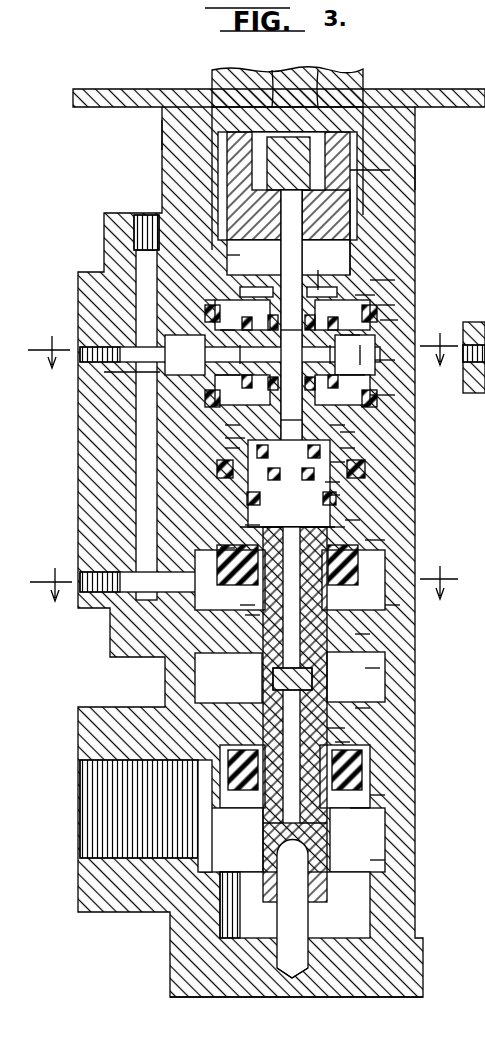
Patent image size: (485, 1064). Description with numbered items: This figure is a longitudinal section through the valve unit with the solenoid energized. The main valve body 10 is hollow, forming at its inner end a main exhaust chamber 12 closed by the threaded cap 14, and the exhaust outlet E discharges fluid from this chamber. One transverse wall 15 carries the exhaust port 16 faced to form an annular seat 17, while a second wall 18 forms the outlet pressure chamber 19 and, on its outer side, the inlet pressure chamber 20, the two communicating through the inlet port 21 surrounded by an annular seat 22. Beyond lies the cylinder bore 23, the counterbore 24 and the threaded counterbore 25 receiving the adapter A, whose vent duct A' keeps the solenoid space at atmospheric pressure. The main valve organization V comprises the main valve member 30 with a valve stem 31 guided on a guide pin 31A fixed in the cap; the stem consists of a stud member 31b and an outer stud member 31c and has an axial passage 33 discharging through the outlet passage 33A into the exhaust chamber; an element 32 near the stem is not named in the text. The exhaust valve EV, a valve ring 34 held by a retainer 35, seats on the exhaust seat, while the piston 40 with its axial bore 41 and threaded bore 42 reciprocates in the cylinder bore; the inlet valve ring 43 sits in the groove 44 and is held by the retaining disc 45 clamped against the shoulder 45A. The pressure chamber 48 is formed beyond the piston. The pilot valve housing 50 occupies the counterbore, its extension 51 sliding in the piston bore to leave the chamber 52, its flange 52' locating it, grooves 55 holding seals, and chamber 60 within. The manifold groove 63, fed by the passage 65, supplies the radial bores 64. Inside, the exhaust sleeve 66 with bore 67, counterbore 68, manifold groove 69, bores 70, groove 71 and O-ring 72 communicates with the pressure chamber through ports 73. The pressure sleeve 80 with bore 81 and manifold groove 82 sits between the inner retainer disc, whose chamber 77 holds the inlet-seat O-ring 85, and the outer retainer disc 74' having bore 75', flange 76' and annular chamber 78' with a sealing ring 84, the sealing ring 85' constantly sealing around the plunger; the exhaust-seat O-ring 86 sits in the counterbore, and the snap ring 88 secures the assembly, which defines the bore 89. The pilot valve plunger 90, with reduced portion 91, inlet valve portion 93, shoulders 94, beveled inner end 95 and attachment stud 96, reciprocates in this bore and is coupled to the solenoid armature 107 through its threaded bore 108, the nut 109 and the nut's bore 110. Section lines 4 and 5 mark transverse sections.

The main valve body 10 is at (420, 863).
The main exhaust chamber 12 is at (375, 860).
The closing nut or cap 14 is at (200, 995).
The transverse wall 15 is at (362, 708).
The exhaust port 16 is at (335, 728).
The annular seat 17 is at (340, 742).
The wall 18 is at (360, 634).
The outlet pressure chamber 19 is at (372, 668).
The inlet pressure chamber 20 is at (180, 612).
The inlet port 21 is at (356, 677).
The annular seat 22 is at (385, 612).
The cylinder bore 23 is at (370, 540).
The counterbore 24 is at (160, 375).
The counterbore 25 is at (360, 300).
The main valve member 30 is at (254, 884).
The valve stem 31 is at (310, 895).
The guide pin 31A is at (290, 960).
The stud member 31b is at (315, 820).
The outer stud member 31c is at (268, 676).
The valve spool 32 is at (247, 820).
The pressure fluid passage 33 is at (258, 840).
The outlet passage 33A is at (320, 845).
The valve ring 34 is at (365, 770).
The valve ring retainer 35 is at (355, 808).
The piston 40 is at (350, 520).
The axial bore 41 is at (250, 525).
The internally threaded bore 42 is at (250, 575).
The valve ring 43 is at (340, 580).
The annular groove or chamber 44 is at (225, 548).
The retaining disc 45 is at (245, 610).
The shoulder 45A is at (252, 622).
The chamber 48 is at (232, 438).
The pilot valve housing 50 is at (330, 425).
The reduced diameter axial extension 51 is at (330, 482).
The space or chamber 52 is at (390, 521).
The flange 52' is at (415, 303).
The spaced grooves 55 is at (205, 312).
The cylindrical chamber 60 is at (343, 257).
The annular groove 63 is at (362, 350).
The radial bores 64 is at (380, 362).
The fluid flow passage 65 is at (140, 455).
The exhaust sleeve 66 is at (345, 448).
The axial bore 67 is at (215, 465).
The counterbore 68 is at (250, 478).
The annular manifold groove 69 is at (230, 425).
The bores 70 is at (345, 430).
The annular groove 71 is at (350, 452).
The sealing ring 72 is at (335, 462).
The passages or ports 73 is at (230, 448).
The retainer disc 74' is at (416, 318).
The bore 75' is at (289, 330).
The flange 76' is at (240, 262).
The circular chamber 77 is at (291, 325).
The annular chamber 78' is at (190, 293).
The pressure sleeve 80 is at (227, 371).
The axial bore 81 is at (350, 330).
The annular manifold groove 82 is at (352, 371).
The sealing ring 84 is at (278, 328).
The packing ring 85 is at (254, 386).
The packing ring 85' is at (318, 271).
The sealing ring 86 is at (330, 495).
The snap ring 88 is at (375, 283).
The axial bore 89 is at (291, 415).
The pilot valve plunger 90 is at (289, 262).
The reduced diameter portion 91 is at (215, 358).
The inlet valve forming portion 93 is at (378, 395).
The shoulders 94 is at (225, 330).
The inner end 95 is at (287, 483).
The attachment shank or stud 96 is at (272, 90).
The armature 107 is at (332, 85).
The internally threaded axial bore 108 is at (318, 95).
The nut 109 is at (352, 212).
The axial bore 110 is at (250, 207).
The adapter A is at (131, 135).
The vent passage or duct A' is at (424, 169).
The exhaust outlet E is at (90, 822).
The exhaust valve EV is at (370, 795).
The main valve organization V is at (244, 664).
The section line 4- 4 is at (243, 342).
The section line 5- 5 is at (244, 573).